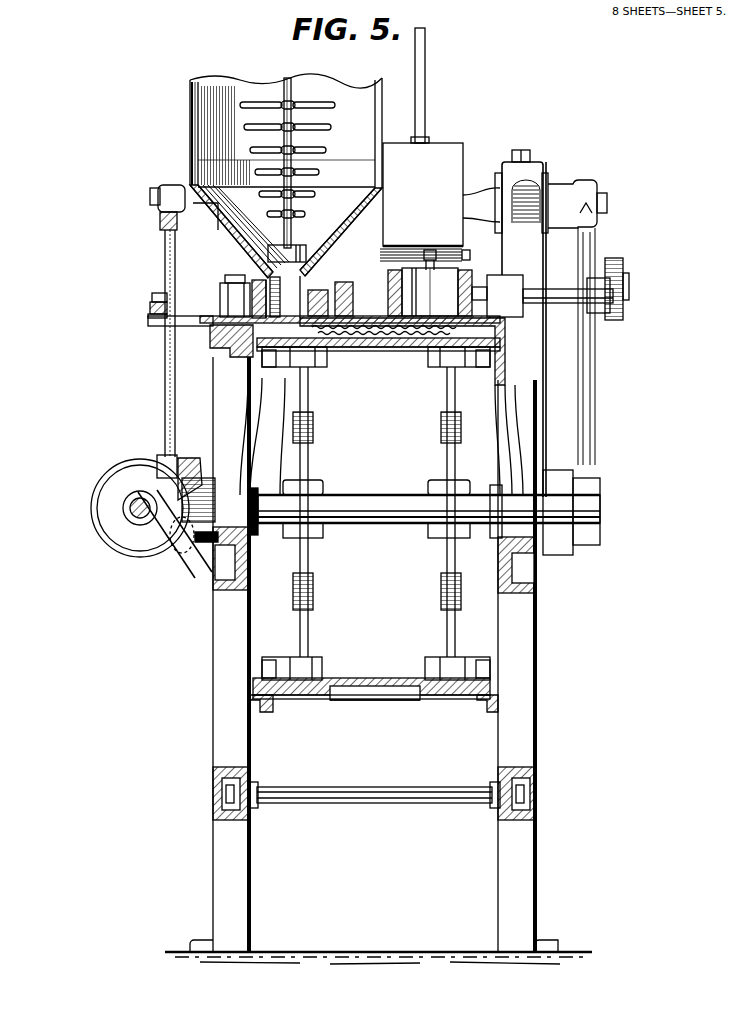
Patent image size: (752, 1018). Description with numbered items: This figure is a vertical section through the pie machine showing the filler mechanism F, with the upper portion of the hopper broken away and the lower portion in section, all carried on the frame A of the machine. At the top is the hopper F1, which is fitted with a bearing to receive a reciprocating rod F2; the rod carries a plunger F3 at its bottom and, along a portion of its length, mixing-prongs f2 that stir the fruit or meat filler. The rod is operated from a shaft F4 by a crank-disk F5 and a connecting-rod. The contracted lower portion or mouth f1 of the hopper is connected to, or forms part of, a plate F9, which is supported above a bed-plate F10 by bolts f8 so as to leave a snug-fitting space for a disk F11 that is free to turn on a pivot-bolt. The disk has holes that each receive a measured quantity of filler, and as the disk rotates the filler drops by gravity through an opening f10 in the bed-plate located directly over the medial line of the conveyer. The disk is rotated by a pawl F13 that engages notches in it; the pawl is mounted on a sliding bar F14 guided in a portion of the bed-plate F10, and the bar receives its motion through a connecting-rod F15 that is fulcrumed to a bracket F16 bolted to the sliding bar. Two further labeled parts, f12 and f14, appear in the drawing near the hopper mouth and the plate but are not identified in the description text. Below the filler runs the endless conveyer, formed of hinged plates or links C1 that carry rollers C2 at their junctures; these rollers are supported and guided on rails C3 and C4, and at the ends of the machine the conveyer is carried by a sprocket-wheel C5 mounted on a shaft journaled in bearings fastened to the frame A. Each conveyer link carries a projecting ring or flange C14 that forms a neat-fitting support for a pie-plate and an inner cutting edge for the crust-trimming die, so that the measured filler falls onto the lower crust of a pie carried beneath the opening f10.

The frame A is at (233, 667).
The plates or links C1 is at (390, 680).
The rollers C2 is at (587, 725).
The rail C3 is at (673, 397).
The rail C4 is at (610, 763).
The sprocket-wheel C5 is at (303, 458).
The projecting ring or flange C14 is at (343, 730).
The filler mechanism F is at (286, 164).
The hopper F1 is at (190, 133).
The reciprocating rod F2 is at (284, 80).
The mixing-prongs f2 is at (320, 128).
The plunger F3 is at (306, 252).
The shaft F4 is at (386, 262).
The crank-disk F5 is at (380, 300).
The plate F9 is at (384, 303).
The bolts f8 is at (440, 283).
The bed-plate F10 is at (507, 332).
The disk F11 is at (413, 343).
The opening f10 is at (370, 343).
The hatched block f12 is at (213, 333).
The bolt f14 is at (428, 258).
The mouth of the hopper f1 is at (280, 295).
The pawl F13 is at (205, 288).
The sliding bar F14 is at (213, 348).
The connecting-rod F15 is at (150, 310).
The bracket F16 is at (148, 318).